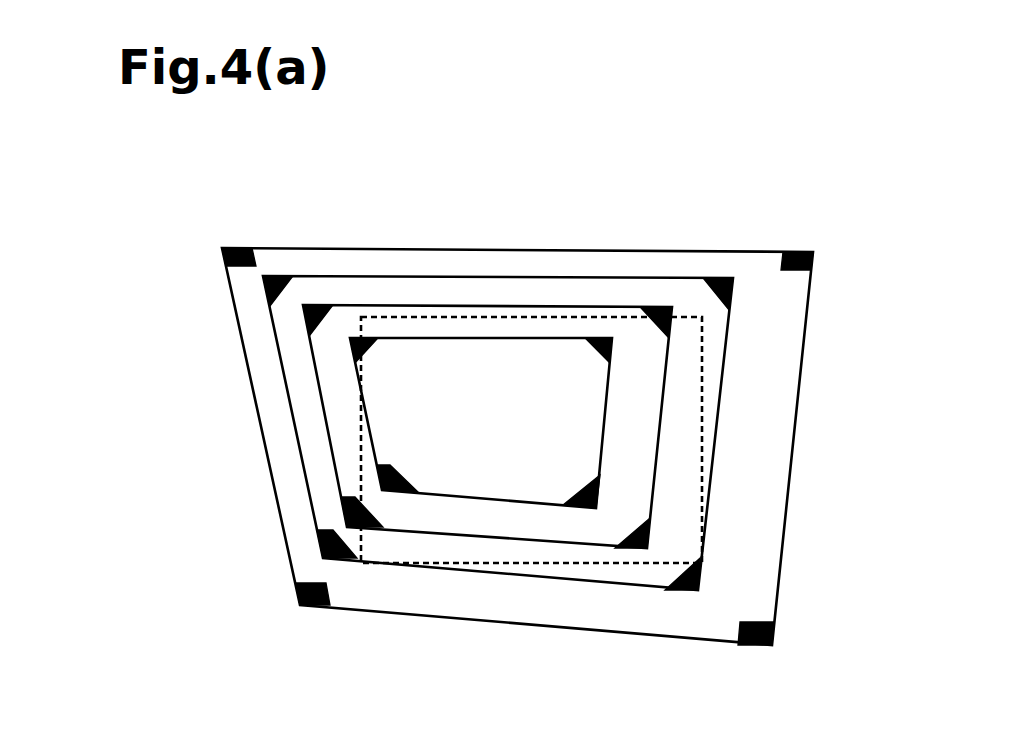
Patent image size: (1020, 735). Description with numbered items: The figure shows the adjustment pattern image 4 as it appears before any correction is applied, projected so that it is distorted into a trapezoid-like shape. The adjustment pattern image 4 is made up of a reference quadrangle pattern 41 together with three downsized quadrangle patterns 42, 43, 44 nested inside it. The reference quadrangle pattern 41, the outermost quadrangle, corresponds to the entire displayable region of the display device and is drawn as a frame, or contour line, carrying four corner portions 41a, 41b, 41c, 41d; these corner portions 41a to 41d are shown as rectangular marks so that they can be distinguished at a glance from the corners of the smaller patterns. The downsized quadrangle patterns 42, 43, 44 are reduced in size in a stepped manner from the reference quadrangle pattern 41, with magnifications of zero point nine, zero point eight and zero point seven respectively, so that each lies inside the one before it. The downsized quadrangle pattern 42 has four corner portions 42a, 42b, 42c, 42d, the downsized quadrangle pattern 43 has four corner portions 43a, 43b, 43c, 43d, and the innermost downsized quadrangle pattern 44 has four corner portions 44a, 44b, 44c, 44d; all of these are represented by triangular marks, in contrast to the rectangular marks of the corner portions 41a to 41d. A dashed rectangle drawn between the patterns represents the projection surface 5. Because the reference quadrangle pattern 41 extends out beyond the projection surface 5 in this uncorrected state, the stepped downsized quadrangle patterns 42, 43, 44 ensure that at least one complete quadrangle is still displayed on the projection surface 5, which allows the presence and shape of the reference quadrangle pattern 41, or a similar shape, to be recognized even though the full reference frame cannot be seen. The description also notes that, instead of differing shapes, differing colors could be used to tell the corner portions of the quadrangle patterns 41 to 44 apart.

The adjustment pattern image 4 is at (545, 184).
The reference quadrangle pattern 41 is at (355, 250).
The downsized quadrangle pattern 42 is at (405, 276).
The downsized quadrangle pattern 43 is at (450, 305).
The downsized quadrangle pattern 44 is at (508, 338).
The projection surface 5 is at (587, 317).
The corner portion 41a is at (222, 258).
The corner portion 41b is at (302, 595).
The corner portion 41c is at (813, 262).
The corner portion 41d is at (772, 633).
The corner portion 42a is at (272, 298).
The corner portion 42b is at (338, 548).
The corner portion 42c is at (730, 295).
The corner portion 42d is at (690, 578).
The corner portion 43a is at (312, 325).
The corner portion 43b is at (362, 510).
The corner portion 43c is at (668, 325).
The corner portion 43d is at (640, 535).
The corner portion 44a is at (356, 348).
The corner portion 44b is at (395, 478).
The corner portion 44c is at (607, 350).
The corner portion 44d is at (600, 495).